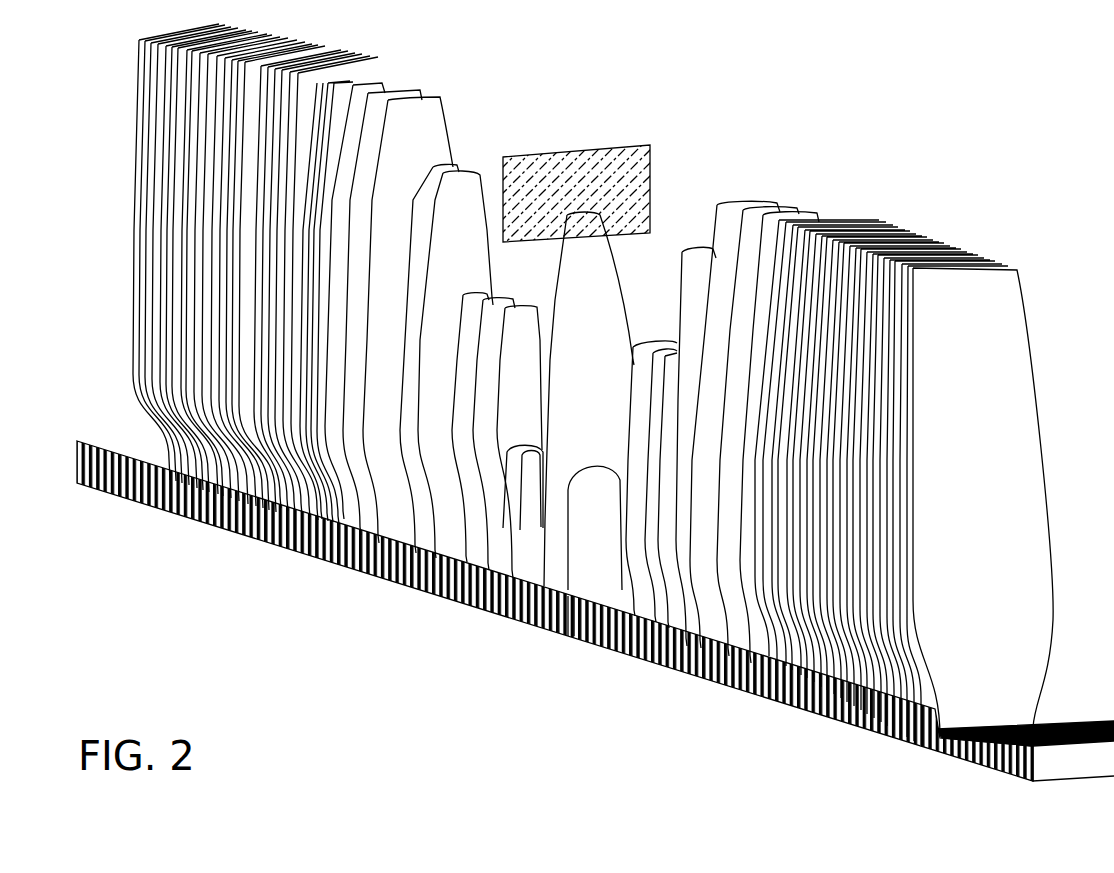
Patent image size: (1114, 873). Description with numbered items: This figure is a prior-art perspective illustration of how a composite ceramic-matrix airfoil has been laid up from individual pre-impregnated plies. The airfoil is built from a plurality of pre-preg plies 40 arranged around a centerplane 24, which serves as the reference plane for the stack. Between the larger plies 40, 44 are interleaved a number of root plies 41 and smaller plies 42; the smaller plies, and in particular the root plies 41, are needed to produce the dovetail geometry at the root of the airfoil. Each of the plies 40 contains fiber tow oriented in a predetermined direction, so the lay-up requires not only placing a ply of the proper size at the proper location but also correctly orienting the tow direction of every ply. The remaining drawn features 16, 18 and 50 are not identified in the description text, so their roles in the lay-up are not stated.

The first fin 16 is at (140, 42).
The last fin 18 is at (1027, 292).
The centerplane 24 is at (597, 150).
The pre-preg plies 40 is at (380, 580).
The root plies 41 is at (574, 634).
The smaller plies 42 is at (573, 522).
The larger plies 44 is at (438, 99).
The intermediate fins 50 is at (462, 290).